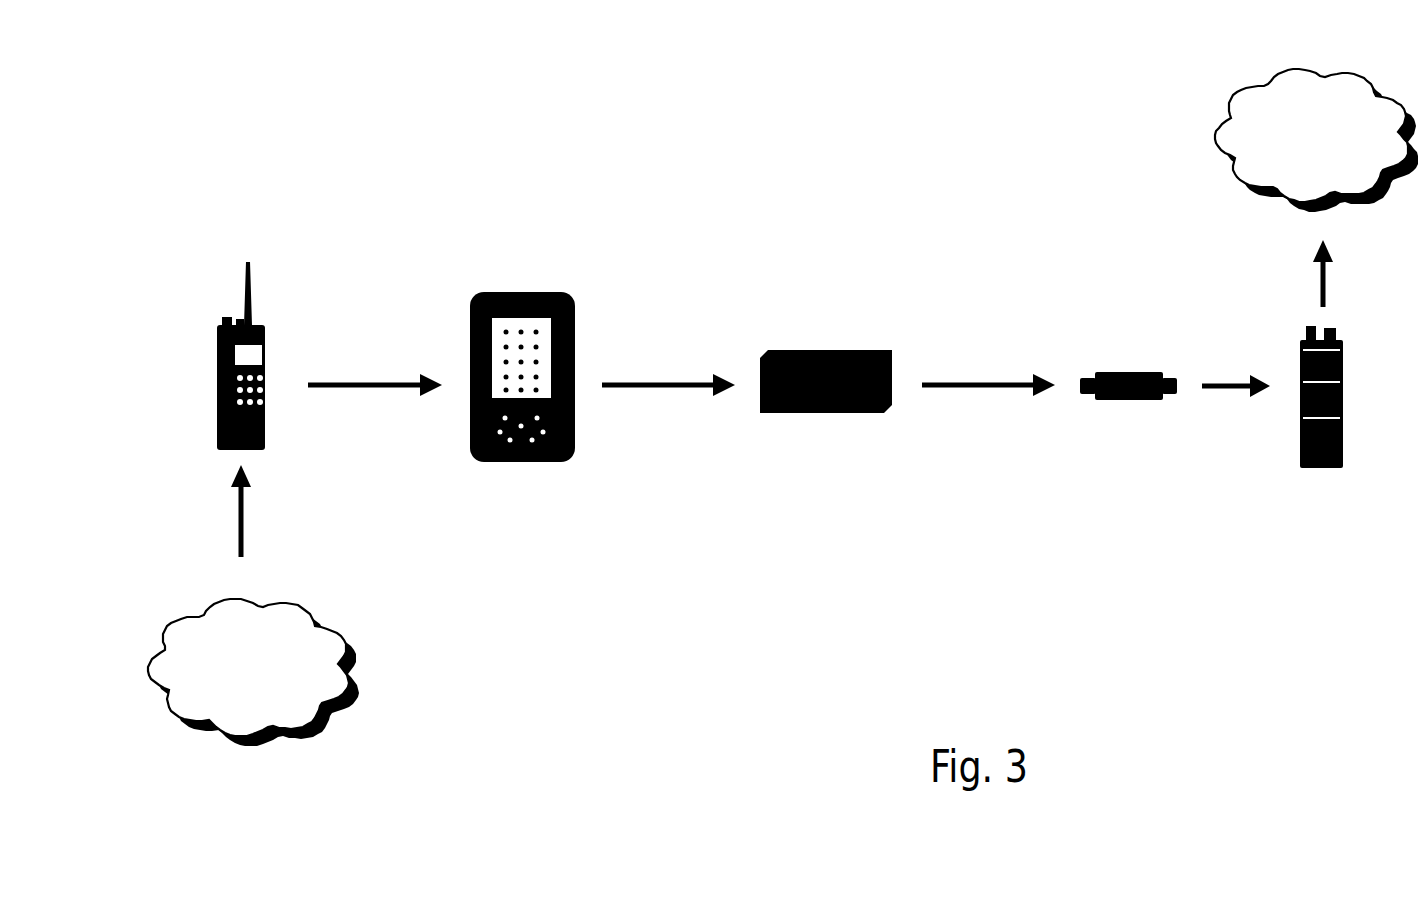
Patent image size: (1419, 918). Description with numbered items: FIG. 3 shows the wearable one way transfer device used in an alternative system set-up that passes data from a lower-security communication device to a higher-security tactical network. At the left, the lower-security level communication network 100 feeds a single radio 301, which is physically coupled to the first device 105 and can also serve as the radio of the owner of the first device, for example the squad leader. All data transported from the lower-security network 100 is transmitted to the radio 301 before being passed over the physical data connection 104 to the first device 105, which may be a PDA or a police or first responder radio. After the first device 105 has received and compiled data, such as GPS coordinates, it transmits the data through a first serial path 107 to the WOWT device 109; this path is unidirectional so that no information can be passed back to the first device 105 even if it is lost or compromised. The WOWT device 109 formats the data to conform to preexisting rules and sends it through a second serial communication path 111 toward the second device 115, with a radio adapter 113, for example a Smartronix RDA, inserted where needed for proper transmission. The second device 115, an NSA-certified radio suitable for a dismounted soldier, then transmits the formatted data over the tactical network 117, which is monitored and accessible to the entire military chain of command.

The lower-security level communication network 100 is at (253, 672).
The radio 301 is at (215, 318).
The physical data connection 104 is at (374, 345).
The first device 105 is at (520, 478).
The first serial path 107 is at (668, 332).
The wearable one way transfer (WOWT) device 109 is at (815, 440).
The second serial communication path 111 is at (989, 333).
The radio adapter 113 is at (1135, 426).
The second device 115 is at (1323, 480).
The tactical network 117 is at (1316, 140).